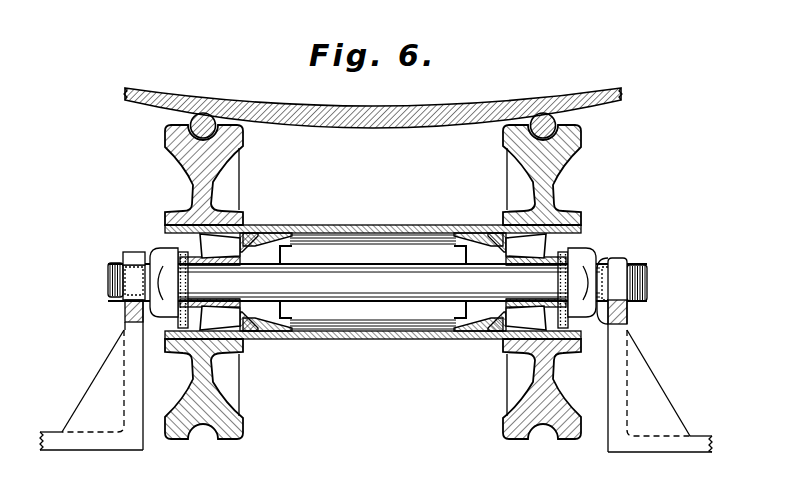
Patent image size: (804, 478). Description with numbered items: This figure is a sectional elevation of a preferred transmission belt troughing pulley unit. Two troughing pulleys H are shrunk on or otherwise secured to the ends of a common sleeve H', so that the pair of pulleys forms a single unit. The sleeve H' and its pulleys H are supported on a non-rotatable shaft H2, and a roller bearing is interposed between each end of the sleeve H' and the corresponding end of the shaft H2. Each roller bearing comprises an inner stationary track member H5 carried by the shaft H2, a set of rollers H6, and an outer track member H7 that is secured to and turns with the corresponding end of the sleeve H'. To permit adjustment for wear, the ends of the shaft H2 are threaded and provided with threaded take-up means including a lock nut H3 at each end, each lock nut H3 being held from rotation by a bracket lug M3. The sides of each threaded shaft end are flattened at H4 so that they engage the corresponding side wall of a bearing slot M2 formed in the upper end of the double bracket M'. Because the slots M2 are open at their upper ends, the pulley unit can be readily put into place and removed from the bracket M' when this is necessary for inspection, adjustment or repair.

The troughing pulley H is at (373, 282).
The sleeve H' is at (373, 267).
The shaft H2 is at (368, 298).
The lock nut H3 is at (163, 250).
The flattened sides of shaft end H4 is at (132, 280).
The inner stationary track member H5 is at (206, 268).
The rollers H6 is at (247, 250).
The outer track member H7 is at (231, 236).
The double bracket M' is at (376, 376).
The bearing slot M2 is at (132, 255).
The bracket lug M3 is at (140, 319).